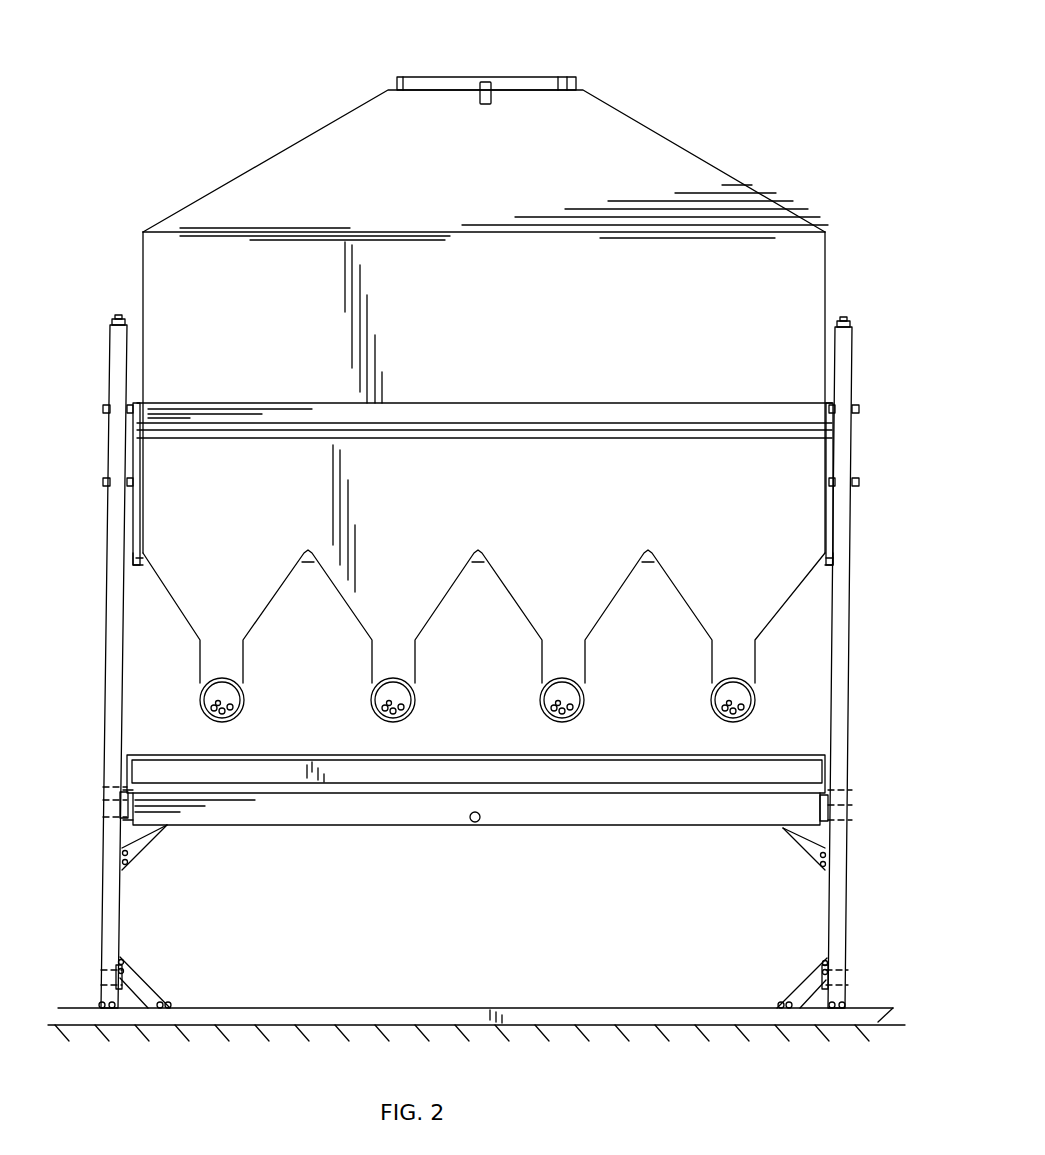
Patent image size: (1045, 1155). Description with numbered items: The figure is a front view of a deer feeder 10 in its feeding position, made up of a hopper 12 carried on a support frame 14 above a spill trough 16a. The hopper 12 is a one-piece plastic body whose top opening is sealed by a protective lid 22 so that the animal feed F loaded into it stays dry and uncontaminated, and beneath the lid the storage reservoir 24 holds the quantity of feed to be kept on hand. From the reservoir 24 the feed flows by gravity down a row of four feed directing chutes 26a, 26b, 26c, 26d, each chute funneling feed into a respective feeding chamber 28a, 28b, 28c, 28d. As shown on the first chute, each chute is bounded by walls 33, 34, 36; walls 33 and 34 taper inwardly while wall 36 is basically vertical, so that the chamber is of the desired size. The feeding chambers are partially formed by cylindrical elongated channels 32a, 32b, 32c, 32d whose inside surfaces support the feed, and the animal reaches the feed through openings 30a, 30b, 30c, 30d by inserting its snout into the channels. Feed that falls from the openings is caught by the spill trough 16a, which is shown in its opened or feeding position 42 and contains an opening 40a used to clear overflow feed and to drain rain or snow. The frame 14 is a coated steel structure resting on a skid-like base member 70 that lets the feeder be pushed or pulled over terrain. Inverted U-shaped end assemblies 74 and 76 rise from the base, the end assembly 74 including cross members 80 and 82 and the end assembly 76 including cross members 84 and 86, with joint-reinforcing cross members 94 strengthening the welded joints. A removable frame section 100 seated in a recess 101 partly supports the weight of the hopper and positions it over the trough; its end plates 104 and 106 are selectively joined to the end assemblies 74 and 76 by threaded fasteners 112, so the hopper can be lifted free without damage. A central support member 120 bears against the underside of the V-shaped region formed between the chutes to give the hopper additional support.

The deer feeder 10 is at (722, 74).
The hopper 12 is at (717, 165).
The support frame 14 is at (850, 668).
The spill trough 16a is at (582, 826).
The protective lid 22 is at (536, 86).
The storage reservoir 24 is at (790, 285).
The feed directing chute 26a is at (248, 577).
The feed directing chute 26b is at (411, 578).
The feed directing chute 26c is at (575, 585).
The feed directing chute 26d is at (718, 580).
The feeding chamber 28a is at (205, 686).
The feeding chamber 28b is at (400, 688).
The feeding chamber 28c is at (576, 690).
The feeding chamber 28d is at (746, 688).
The opening 30a is at (246, 700).
The opening 30b is at (372, 692).
The opening 30c is at (545, 696).
The opening 30d is at (712, 696).
The elongated channel 32a is at (233, 722).
The elongated channel 32b is at (384, 722).
The elongated channel 32c is at (555, 722).
The elongated channel 32d is at (727, 722).
The wall 33 is at (186, 620).
The wall 34 is at (272, 600).
The wall 36 is at (232, 606).
The opening 40a is at (470, 822).
The opened or feeding position 42 is at (833, 752).
The base member 70 is at (343, 1020).
The inverted U-shaped end assembly 74 is at (107, 668).
The inverted U-shaped end assembly 76 is at (846, 697).
The cross member 80 is at (100, 800).
The cross member 82 is at (102, 975).
The cross member 84 is at (840, 812).
The cross member 86 is at (842, 980).
The joint-reinforcing cross member 94 is at (135, 850).
The removable frame section 100 is at (578, 428).
The recess 101 is at (527, 405).
The end plate 104 is at (137, 462).
The end plate 106 is at (829, 455).
The fastener 112 is at (102, 408).
The central support member 120 is at (140, 573).
The animal feed F is at (205, 719).